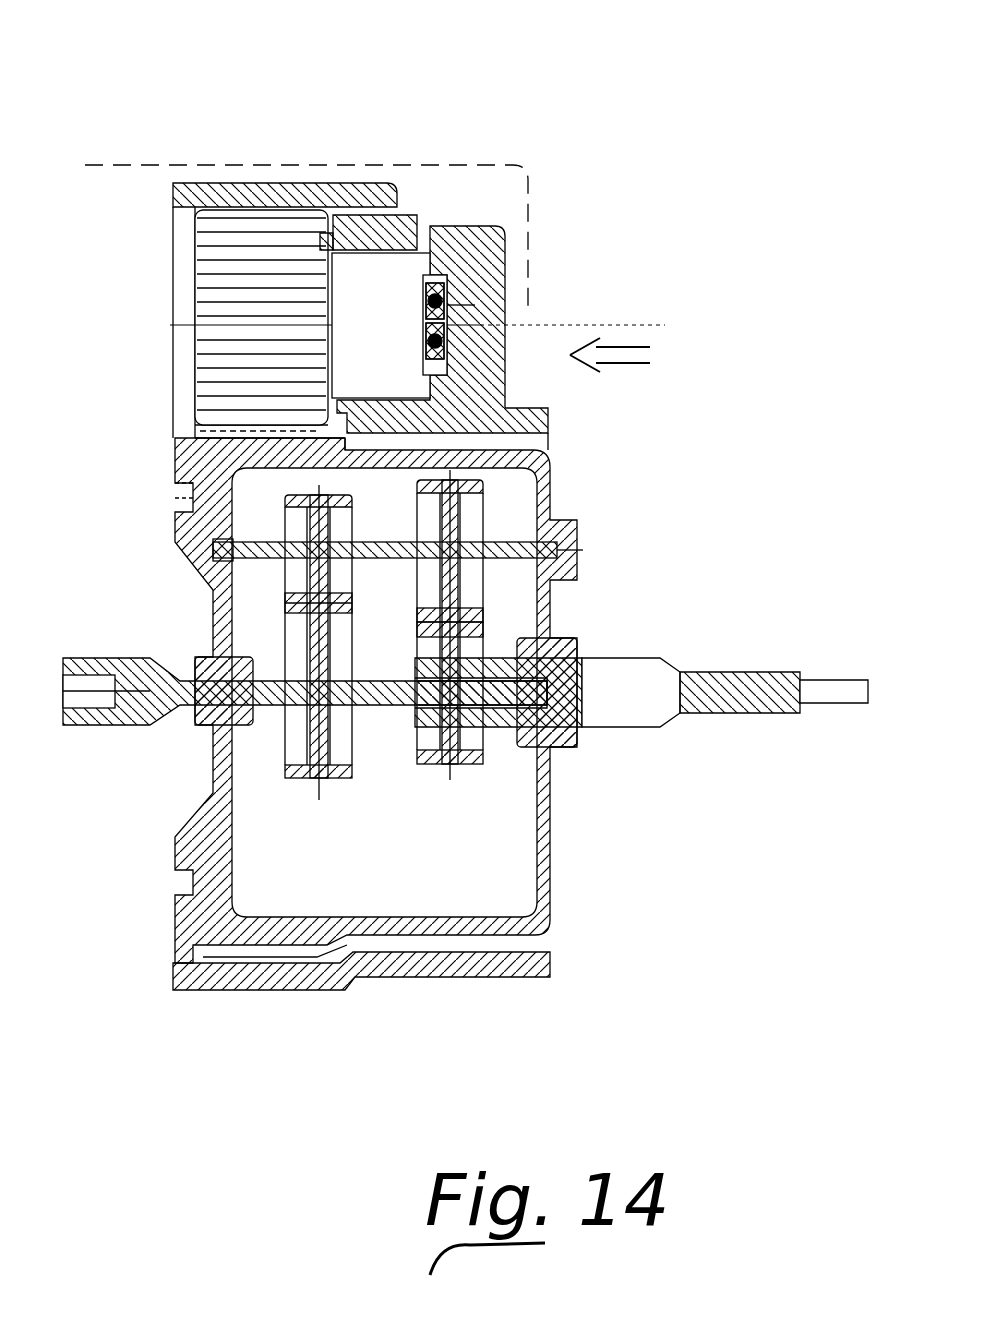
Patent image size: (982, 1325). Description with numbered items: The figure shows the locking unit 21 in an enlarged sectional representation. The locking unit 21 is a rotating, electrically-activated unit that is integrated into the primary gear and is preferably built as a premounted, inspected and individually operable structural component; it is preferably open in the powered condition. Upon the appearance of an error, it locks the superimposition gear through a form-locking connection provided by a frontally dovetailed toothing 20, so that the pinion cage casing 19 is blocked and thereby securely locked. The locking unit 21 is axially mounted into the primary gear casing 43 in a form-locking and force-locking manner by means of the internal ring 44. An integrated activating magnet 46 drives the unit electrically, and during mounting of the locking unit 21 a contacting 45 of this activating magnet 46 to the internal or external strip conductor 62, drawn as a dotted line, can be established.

The pinion cage casing 19 is at (548, 472).
The frontally dovetailed toothing 20 is at (205, 427).
The locking unit 21 is at (649, 361).
The primary gear casing 43 is at (235, 985).
The internal ring 44 is at (350, 245).
The contacting 45 is at (452, 277).
The activating magnet 46 is at (358, 282).
The strip conductor 62 is at (205, 165).